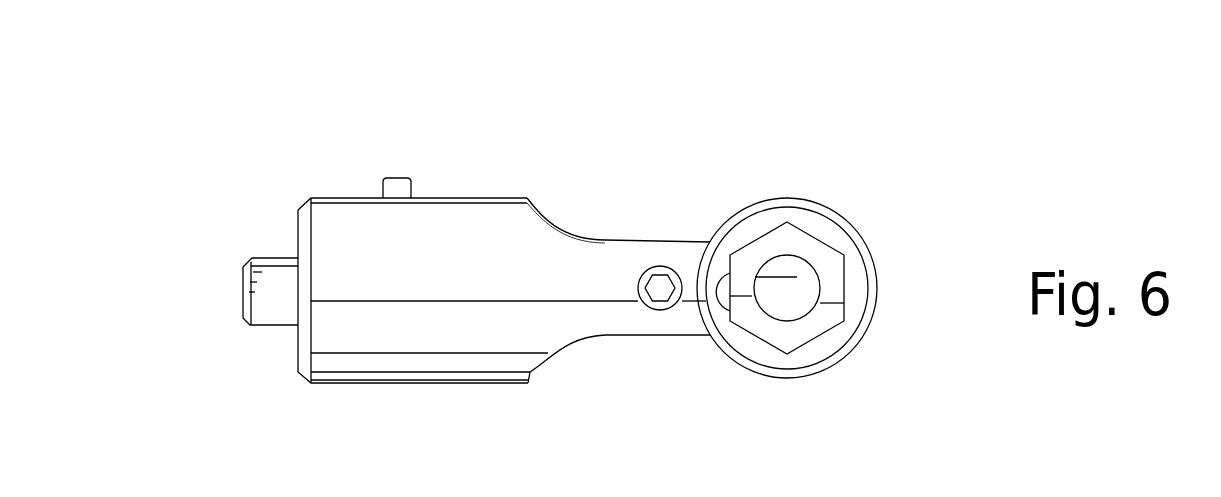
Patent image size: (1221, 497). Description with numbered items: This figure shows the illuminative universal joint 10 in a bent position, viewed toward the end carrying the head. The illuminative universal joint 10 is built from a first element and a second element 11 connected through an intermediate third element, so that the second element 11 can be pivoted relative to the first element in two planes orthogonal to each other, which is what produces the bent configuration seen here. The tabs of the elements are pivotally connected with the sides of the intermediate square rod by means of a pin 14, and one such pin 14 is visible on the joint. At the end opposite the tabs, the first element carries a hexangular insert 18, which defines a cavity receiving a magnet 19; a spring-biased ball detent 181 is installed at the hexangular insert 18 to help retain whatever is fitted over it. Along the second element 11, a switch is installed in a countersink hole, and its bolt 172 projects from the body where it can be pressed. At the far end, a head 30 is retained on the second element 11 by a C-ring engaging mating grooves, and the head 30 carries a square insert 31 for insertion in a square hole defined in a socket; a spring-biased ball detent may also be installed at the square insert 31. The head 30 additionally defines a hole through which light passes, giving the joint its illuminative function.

The illuminative universal joint 10 is at (617, 190).
The second element 11 is at (533, 270).
The pin 14 is at (660, 286).
The hexangular insert 18 is at (837, 242).
The magnet 19 is at (788, 273).
The spring-biased ball detent 181 is at (723, 290).
The bolt 172 is at (398, 186).
The head 30 is at (218, 255).
The square insert 31 is at (272, 288).